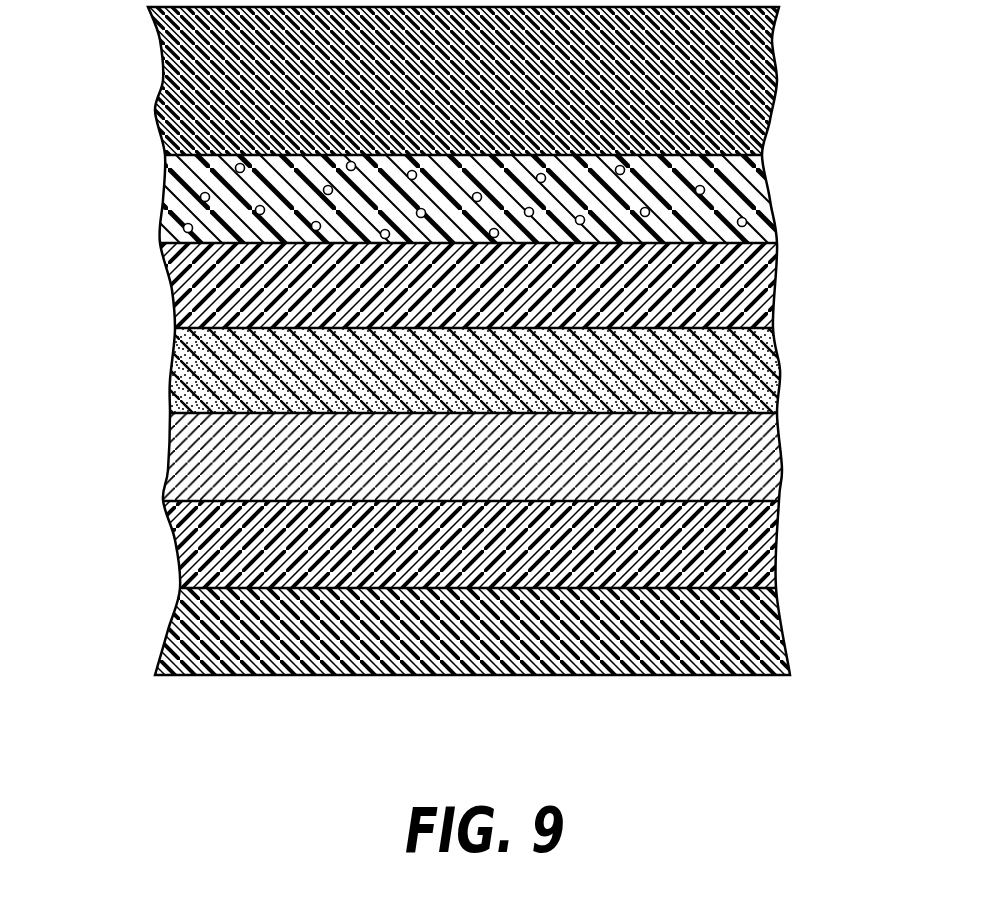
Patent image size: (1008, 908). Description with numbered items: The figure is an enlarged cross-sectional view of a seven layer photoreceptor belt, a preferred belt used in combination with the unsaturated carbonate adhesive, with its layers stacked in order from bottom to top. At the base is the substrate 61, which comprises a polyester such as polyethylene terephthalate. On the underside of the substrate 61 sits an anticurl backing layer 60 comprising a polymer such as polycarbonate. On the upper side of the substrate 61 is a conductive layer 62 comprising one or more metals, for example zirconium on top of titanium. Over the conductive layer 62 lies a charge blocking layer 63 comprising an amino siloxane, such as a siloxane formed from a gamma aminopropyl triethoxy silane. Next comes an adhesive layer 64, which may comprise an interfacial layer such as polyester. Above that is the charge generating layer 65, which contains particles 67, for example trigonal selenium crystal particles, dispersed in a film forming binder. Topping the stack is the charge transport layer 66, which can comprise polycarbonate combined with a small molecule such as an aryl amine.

The anticurl backing layer 60 is at (755, 641).
The substrate 61 is at (758, 550).
The conductive layer 62 is at (760, 462).
The charge blocking layer 63 is at (760, 372).
The adhesive layer 64 is at (758, 280).
The charge generating layer 65 is at (765, 196).
The charge transport layer 66 is at (753, 76).
The particles 67 is at (178, 220).